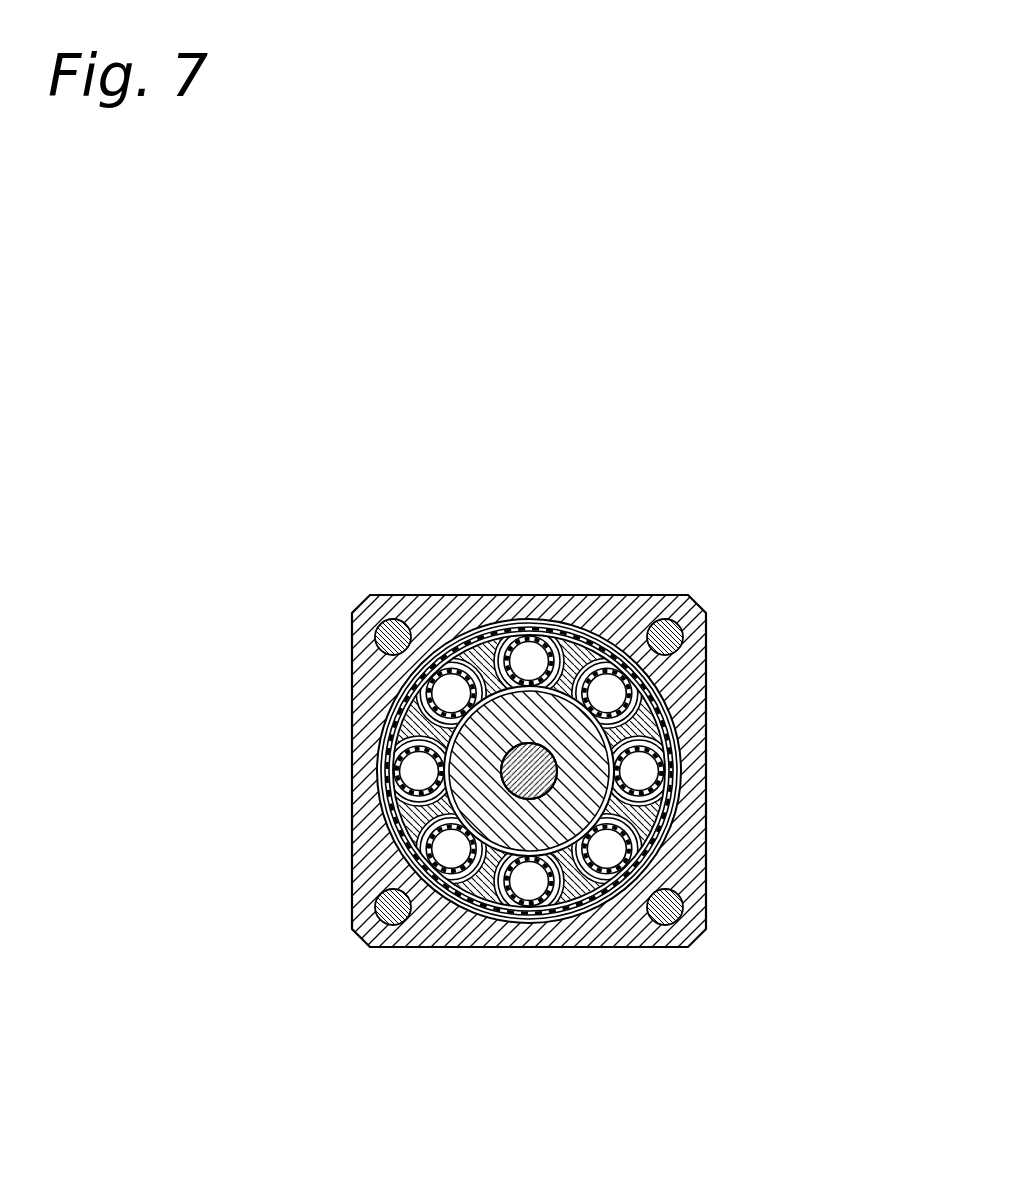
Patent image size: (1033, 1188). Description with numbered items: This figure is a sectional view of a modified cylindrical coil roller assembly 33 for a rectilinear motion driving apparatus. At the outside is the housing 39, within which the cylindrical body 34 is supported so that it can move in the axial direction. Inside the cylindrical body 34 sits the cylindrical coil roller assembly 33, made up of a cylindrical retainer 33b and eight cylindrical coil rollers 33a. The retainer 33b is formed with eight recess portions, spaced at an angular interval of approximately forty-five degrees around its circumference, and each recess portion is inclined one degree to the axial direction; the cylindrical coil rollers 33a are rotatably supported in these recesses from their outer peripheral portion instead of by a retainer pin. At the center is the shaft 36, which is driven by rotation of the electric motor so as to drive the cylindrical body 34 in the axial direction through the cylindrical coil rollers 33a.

The cylindrical coil roller assembly 33 is at (650, 840).
The cylindrical coil roller 33a is at (517, 645).
The retainer 33b is at (652, 724).
The cylindrical body 34 is at (667, 803).
The shaft 36 is at (536, 742).
The housing 39 is at (695, 758).